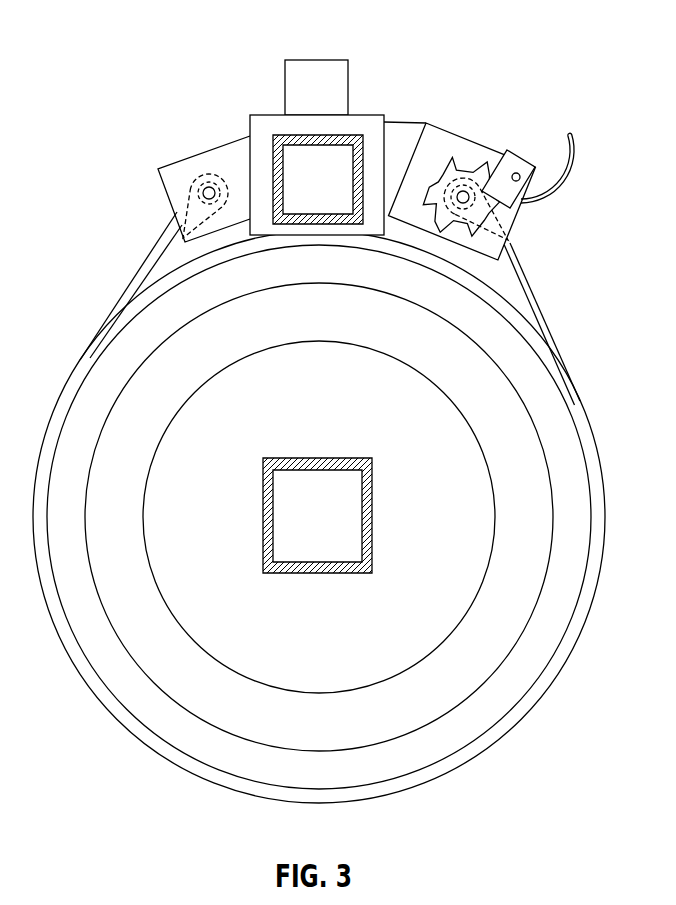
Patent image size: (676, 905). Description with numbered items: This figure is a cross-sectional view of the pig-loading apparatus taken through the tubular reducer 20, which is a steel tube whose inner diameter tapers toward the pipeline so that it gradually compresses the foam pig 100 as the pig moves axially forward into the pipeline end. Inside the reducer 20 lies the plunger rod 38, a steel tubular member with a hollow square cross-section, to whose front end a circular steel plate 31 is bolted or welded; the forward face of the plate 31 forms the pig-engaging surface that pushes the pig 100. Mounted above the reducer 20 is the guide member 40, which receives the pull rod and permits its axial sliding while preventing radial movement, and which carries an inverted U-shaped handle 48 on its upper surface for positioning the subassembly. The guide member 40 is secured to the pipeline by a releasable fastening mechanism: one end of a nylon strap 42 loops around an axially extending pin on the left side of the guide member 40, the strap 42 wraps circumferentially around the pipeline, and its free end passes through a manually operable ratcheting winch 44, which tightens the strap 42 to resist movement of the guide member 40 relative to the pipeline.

The tubular reducer 20 is at (50, 614).
The pig 100 is at (213, 723).
The circular steel plate 31 is at (433, 648).
The plunger rod 38 is at (307, 573).
The guide member 40 is at (375, 115).
The nylon strap 42 is at (543, 310).
The ratcheting winch 44 is at (474, 143).
The handle 48 is at (314, 60).